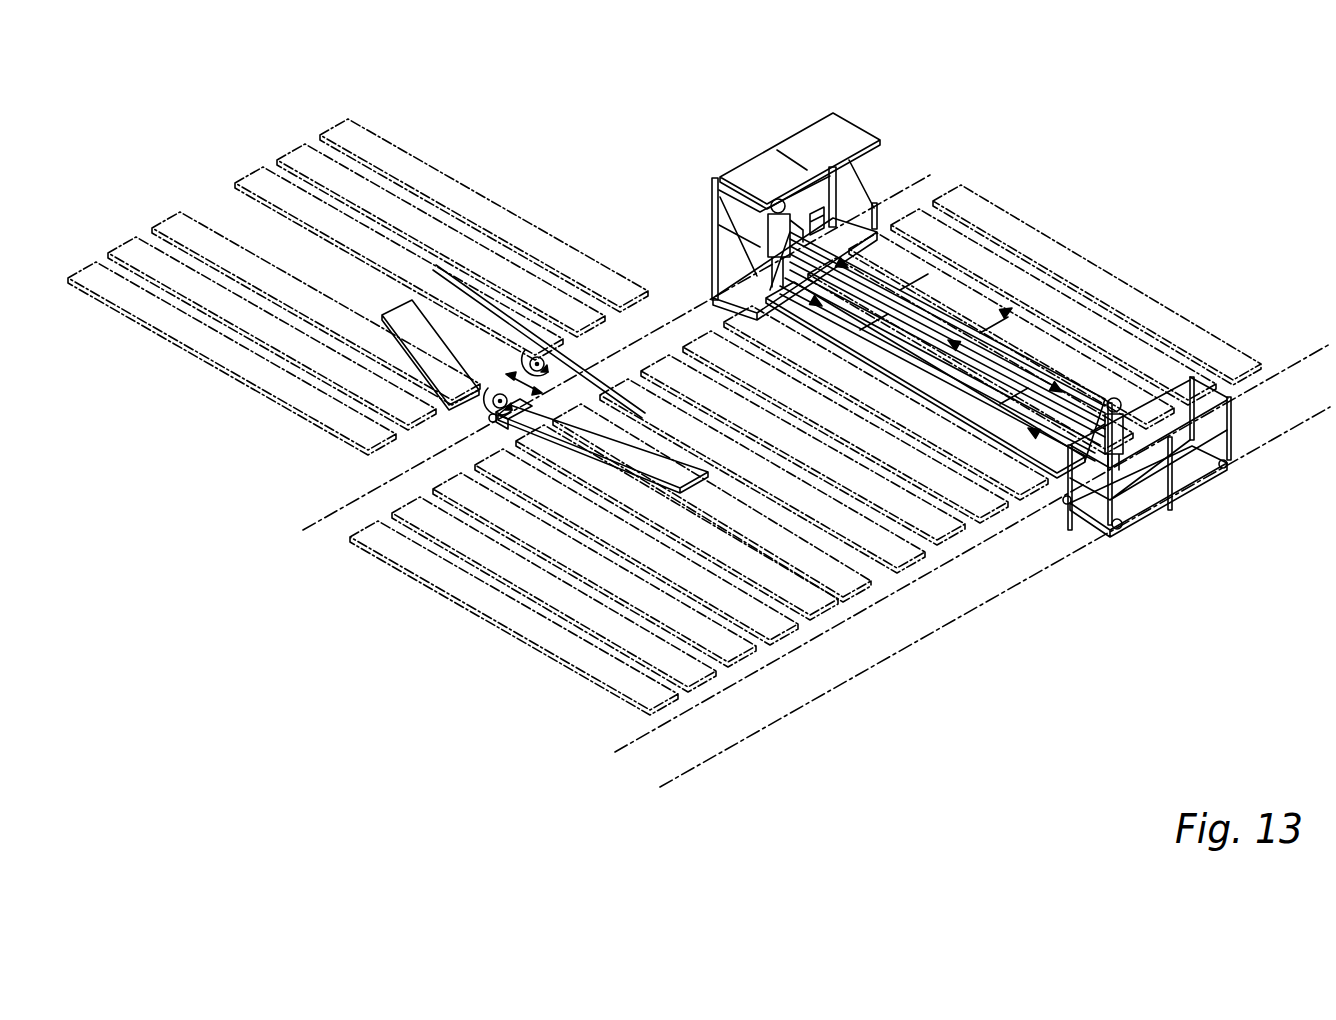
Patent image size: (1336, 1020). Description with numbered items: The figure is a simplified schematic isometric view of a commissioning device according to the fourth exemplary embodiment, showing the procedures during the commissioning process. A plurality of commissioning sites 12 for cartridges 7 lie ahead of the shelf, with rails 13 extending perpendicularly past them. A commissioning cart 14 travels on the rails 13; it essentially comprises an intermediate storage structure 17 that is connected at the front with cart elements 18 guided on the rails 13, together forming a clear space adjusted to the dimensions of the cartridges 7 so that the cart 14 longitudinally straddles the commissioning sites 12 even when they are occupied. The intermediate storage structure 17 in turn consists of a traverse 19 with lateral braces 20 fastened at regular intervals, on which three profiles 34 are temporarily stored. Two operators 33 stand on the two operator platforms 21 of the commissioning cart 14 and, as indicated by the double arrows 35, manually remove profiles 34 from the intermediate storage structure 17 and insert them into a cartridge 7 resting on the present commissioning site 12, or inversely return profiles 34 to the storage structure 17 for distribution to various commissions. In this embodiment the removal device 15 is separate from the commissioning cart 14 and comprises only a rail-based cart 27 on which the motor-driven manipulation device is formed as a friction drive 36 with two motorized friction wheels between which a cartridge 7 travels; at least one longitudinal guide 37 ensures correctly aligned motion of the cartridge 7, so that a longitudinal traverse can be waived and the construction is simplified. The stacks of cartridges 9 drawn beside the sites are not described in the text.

The cartridge 7 is at (418, 318).
The stack of plates 9 is at (132, 306).
The commissioning site 12 is at (468, 597).
The rail 13 is at (318, 520).
The commissioning cart 14 is at (1197, 549).
The removal device 15 is at (523, 440).
The intermediate storage structure 17 is at (905, 280).
The cart element 18 is at (1188, 478).
The traverse 19 is at (1032, 348).
The lateral brace 20 is at (975, 296).
The operator platform 21 is at (806, 192).
The rail-based cart 27 is at (496, 432).
The operator 33 is at (760, 246).
The profile 34 is at (962, 300).
The double arrow 35 is at (1030, 408).
The friction drive 36 is at (537, 357).
The longitudinal guide 37 is at (586, 392).